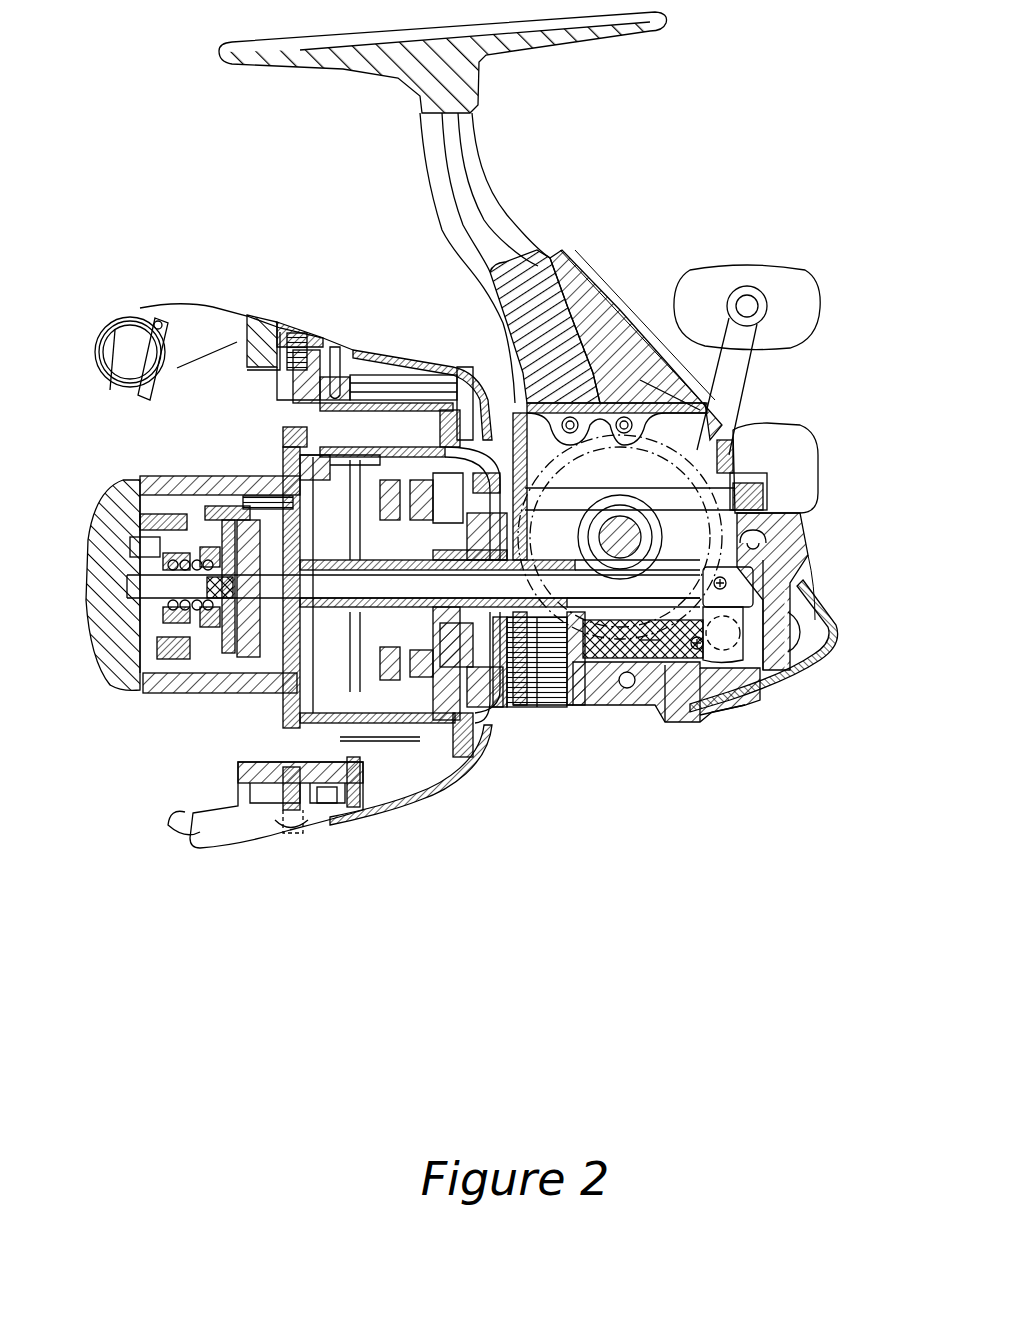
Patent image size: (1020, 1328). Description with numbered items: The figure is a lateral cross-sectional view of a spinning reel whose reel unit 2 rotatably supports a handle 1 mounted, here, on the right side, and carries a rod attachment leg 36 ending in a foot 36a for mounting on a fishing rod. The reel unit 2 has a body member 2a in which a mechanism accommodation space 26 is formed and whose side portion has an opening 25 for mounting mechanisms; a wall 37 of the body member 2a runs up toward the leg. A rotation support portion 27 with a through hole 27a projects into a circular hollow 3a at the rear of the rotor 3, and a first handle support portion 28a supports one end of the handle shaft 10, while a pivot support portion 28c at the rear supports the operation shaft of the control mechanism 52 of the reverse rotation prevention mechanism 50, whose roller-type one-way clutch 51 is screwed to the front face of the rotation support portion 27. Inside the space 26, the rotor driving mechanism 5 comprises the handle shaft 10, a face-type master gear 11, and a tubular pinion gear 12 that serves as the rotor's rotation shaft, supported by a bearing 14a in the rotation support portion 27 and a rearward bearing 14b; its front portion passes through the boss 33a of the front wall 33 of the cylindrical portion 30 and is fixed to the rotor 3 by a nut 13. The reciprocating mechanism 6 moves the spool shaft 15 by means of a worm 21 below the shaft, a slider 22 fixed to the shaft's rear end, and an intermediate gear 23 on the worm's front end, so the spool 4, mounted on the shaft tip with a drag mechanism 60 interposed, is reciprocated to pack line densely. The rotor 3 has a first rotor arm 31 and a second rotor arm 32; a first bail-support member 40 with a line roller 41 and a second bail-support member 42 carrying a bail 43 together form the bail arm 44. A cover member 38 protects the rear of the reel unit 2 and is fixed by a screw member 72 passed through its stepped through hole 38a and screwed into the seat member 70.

The handle 1 is at (788, 282).
The reel unit 2 is at (575, 215).
The body member 2a is at (797, 553).
The rotor 3 is at (427, 745).
The circular hollow 3a is at (410, 750).
The spool 4 is at (190, 700).
The rotor driving mechanism 5 is at (725, 440).
The reciprocating mechanism 6 is at (685, 713).
The handle shaft 10 is at (807, 487).
The master gear 11 is at (650, 345).
The pinion gear 12 is at (430, 760).
The nut 13 is at (328, 633).
The bearing 14a is at (460, 745).
The bearing 14b is at (590, 697).
The spool shaft 15 is at (480, 723).
The worm 21 is at (633, 707).
The slider 22 is at (760, 700).
The intermediate gear 23 is at (532, 707).
The opening 25 is at (811, 700).
The mechanism accommodation space 26 is at (528, 330).
The rotation support portion 27 is at (510, 723).
The through hole 27a is at (530, 420).
The first handle support portion 28a is at (662, 693).
The pivot support portion 28c is at (783, 457).
The cylindrical portion 30 is at (382, 735).
The first rotor arm 31 is at (357, 350).
The second rotor arm 32 is at (313, 810).
The front wall 33 is at (315, 467).
The boss 33a is at (395, 440).
The rod attachment leg 36 is at (478, 192).
The mounting foot 36a is at (640, 38).
The body wall 37 is at (620, 313).
The cover member 38 is at (783, 695).
The stepped through hole 38a is at (700, 740).
The first bail-support member 40 is at (207, 317).
The line roller 41 is at (123, 315).
The second bail-support member 42 is at (237, 833).
The bail 43 is at (150, 393).
The bail arm 44 is at (120, 395).
The reverse rotation prevention mechanism 50 is at (470, 440).
The one-way clutch 51 is at (490, 445).
The control mechanism 52 is at (582, 400).
The drag mechanism 60 is at (165, 660).
The seat member 70 is at (743, 713).
The screw member 72 is at (717, 717).